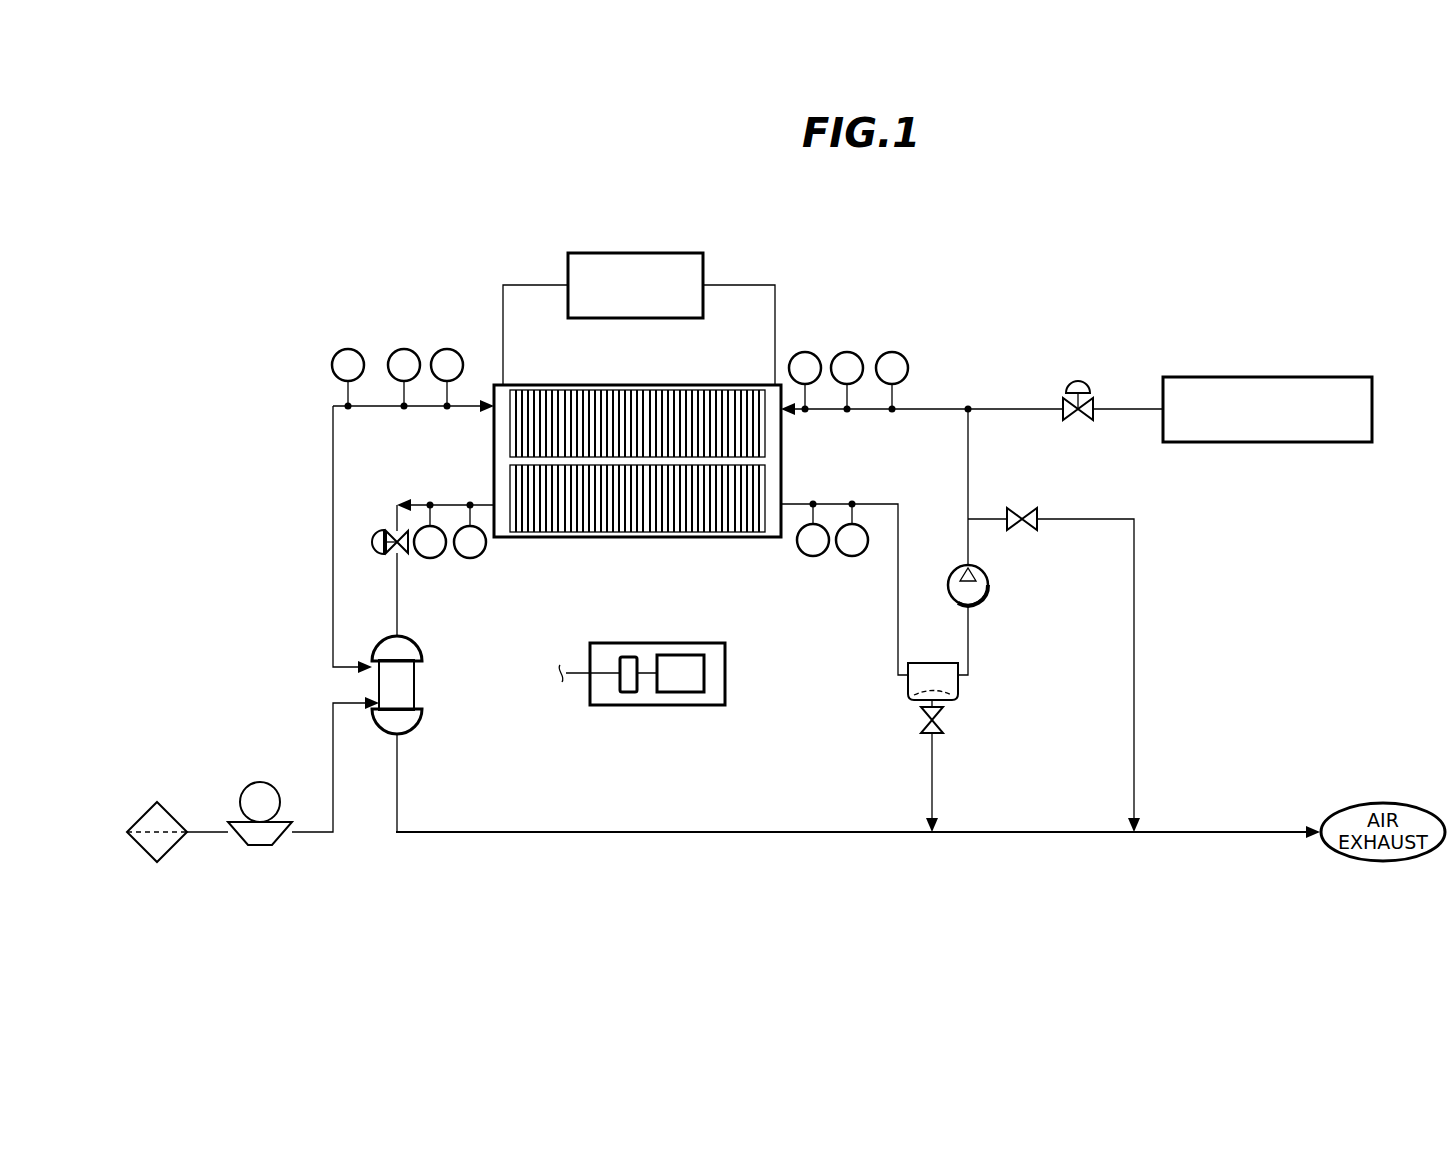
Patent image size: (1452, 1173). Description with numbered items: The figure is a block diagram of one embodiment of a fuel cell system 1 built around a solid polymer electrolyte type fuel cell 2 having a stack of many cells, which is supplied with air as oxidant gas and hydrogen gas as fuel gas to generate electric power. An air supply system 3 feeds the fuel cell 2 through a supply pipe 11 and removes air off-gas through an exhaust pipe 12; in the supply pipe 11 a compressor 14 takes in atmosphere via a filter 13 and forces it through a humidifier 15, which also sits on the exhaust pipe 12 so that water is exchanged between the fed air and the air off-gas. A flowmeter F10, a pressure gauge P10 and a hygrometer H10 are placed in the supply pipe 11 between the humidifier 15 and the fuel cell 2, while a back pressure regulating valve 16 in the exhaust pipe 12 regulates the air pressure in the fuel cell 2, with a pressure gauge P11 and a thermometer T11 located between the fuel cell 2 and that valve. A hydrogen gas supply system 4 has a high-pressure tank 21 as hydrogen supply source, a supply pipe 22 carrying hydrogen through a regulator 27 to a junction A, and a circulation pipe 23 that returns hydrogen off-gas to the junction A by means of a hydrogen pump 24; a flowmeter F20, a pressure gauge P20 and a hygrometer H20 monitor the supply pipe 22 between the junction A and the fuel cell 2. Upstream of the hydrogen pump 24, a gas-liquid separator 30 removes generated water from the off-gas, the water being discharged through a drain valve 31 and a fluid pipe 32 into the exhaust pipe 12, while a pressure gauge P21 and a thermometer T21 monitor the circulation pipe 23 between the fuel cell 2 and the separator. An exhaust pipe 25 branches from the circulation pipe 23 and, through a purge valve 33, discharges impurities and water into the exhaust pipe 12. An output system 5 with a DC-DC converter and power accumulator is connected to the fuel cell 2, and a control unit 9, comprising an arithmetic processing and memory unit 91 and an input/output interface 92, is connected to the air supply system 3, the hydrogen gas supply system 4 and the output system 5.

The fuel cell system 1 is at (754, 862).
The fuel cell 2 is at (657, 385).
The air supply system 3 is at (470, 728).
The hydrogen gas supply system 4 is at (1104, 628).
The output system 5 is at (705, 273).
The control unit 9 is at (642, 682).
The supply pipe 11 is at (333, 567).
The exhaust pipe 12 is at (445, 505).
The filter 13 is at (157, 802).
The compressor 14 is at (250, 787).
The humidifier 15 is at (416, 692).
The back pressure regulating valve 16 is at (378, 531).
The high-pressure tank 21 is at (1262, 377).
The supply pipe 22 is at (1116, 412).
The circulation pipe 23 is at (898, 612).
The hydrogen pump 24 is at (984, 598).
The exhaust pipe 25 is at (1134, 587).
The regulator 27 is at (1078, 381).
The gas-liquid separator 30 is at (908, 689).
The drain valve 31 is at (921, 726).
The fluid pipe 32 is at (932, 762).
The purge valve 33 is at (1027, 530).
The arithmetic processing and memory unit 91 is at (626, 656).
The input/output interface 92 is at (679, 655).
The junction A is at (966, 413).
The flowmeter F10 is at (332, 365).
The pressure gauge P10 is at (404, 349).
The hygrometer H10 is at (462, 332).
The hygrometer H20 is at (805, 352).
The pressure gauge P20 is at (847, 352).
The flowmeter F20 is at (908, 368).
The pressure gauge P11 is at (432, 559).
The thermometer T11 is at (486, 549).
The thermometer T21 is at (797, 547).
The pressure gauge P21 is at (853, 557).